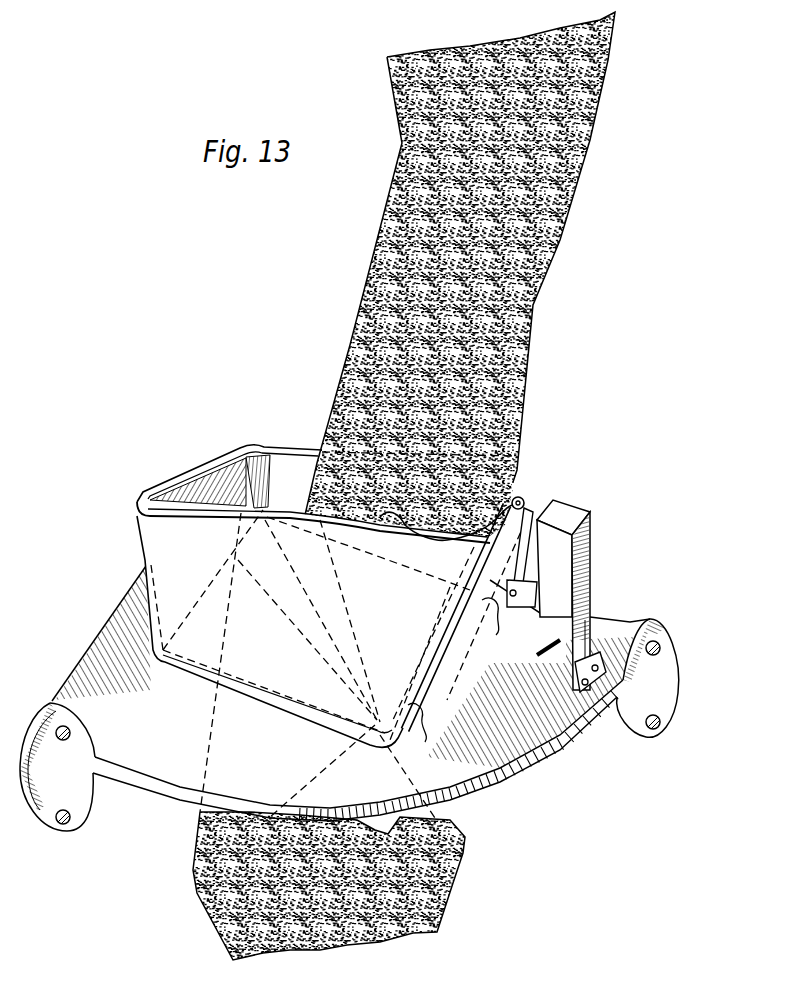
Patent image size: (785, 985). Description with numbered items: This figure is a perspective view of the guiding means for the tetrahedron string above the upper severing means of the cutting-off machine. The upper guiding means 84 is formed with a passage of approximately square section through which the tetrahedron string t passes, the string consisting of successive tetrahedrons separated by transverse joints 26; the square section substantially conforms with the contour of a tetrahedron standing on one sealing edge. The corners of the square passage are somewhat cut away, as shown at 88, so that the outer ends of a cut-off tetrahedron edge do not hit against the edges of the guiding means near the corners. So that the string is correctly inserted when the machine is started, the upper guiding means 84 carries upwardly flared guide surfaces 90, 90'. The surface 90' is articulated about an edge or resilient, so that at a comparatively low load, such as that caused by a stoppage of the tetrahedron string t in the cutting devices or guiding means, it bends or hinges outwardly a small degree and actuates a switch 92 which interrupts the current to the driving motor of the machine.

The tetrahedron string t is at (378, 262).
The transverse joint 26 is at (533, 303).
The upper guiding means 84 is at (160, 520).
The cut-away corner 88 is at (167, 663).
The upwardly flared guide surface 90 is at (440, 543).
The articulated guide surface 90' is at (459, 622).
The switch 92 is at (553, 512).